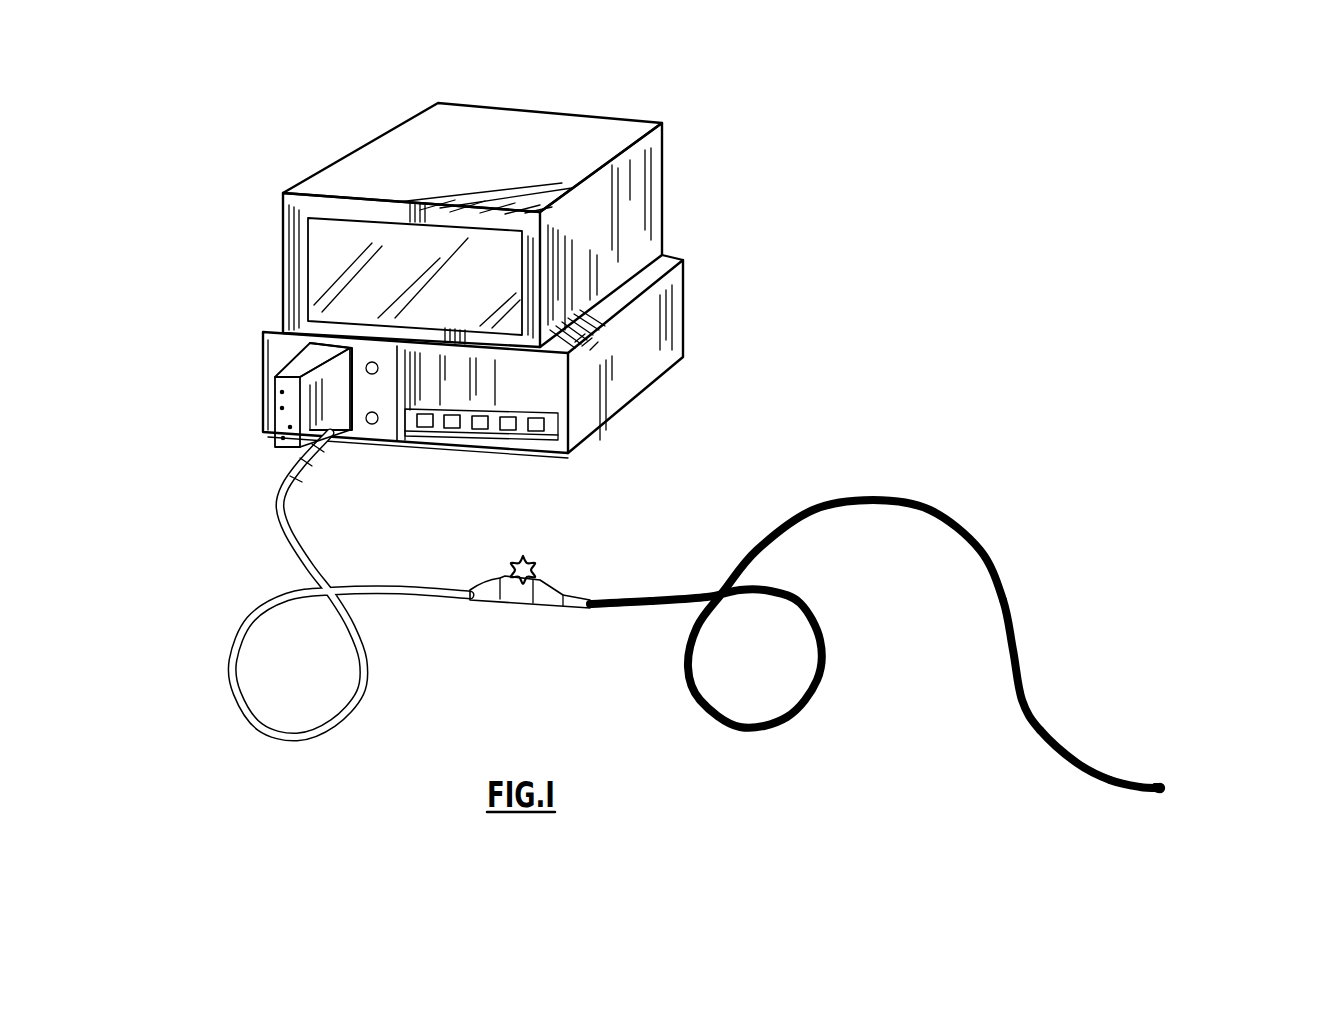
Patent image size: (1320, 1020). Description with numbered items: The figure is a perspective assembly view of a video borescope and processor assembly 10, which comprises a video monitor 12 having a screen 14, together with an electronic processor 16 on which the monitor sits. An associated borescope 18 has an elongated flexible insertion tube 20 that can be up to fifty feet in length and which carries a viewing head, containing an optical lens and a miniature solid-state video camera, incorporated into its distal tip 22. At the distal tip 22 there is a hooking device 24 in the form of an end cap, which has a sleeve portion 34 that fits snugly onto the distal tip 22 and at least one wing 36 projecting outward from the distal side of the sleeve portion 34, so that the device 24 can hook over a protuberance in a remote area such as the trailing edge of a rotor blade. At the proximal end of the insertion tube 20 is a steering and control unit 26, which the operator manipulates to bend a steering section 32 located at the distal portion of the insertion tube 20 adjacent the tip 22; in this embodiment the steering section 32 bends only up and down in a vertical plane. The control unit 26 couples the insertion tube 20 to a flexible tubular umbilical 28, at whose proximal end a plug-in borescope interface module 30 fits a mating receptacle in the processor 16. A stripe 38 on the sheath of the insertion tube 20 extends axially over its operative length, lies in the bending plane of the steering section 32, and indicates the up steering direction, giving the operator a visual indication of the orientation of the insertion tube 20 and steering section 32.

The video borescope and processor assembly 10 is at (752, 196).
The video monitor 12 is at (653, 117).
The screen 14 is at (320, 253).
The electronic processor 16 is at (670, 327).
The borescope 18 is at (700, 580).
The insertion tube 20 is at (890, 497).
The distal tip 22 is at (1144, 773).
The hooking device 24 is at (1165, 783).
The steering and control unit 26 is at (528, 603).
The umbilical 28 is at (278, 600).
The borescope interface module 30 is at (333, 405).
The steering section 32 is at (1096, 762).
The sleeve portion 34 is at (1157, 790).
The wing 36 is at (1157, 783).
The stripe 38 is at (1010, 693).